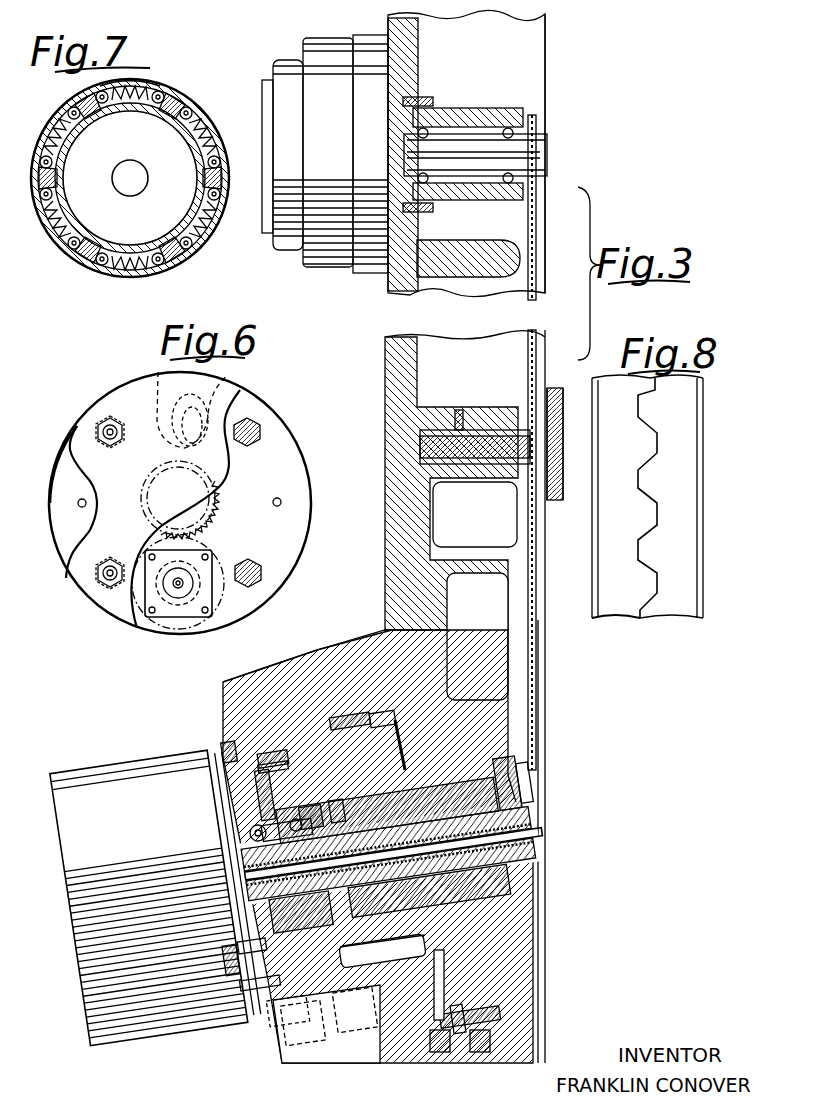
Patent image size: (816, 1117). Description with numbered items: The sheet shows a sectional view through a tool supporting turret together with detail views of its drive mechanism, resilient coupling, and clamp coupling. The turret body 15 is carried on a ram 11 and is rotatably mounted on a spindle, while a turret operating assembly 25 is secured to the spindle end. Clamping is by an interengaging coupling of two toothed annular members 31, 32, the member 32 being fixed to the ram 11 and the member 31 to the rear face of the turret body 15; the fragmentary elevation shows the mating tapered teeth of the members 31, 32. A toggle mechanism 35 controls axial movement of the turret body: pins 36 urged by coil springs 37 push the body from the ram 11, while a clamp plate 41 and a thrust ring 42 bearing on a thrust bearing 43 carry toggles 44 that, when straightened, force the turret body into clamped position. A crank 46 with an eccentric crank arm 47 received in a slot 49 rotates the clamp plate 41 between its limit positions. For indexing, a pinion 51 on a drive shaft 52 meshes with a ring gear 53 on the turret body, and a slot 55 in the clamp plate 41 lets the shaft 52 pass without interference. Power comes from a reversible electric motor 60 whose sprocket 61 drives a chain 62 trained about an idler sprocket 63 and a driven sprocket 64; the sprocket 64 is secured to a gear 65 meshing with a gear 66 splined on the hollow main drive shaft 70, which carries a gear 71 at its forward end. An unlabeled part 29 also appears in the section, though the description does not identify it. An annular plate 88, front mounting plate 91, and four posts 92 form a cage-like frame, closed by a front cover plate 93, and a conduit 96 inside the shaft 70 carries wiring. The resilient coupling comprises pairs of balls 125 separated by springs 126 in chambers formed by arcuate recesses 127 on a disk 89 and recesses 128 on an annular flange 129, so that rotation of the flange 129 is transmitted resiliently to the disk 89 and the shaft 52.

In FIG. 3, the ram 11 is at (512, 1060).
In FIG. 3, the turret body 15 is at (347, 652).
In FIG. 3, the turret operating assembly 25 is at (126, 750).
In FIG. 3, the bearing sleeve 29 is at (384, 795).
In FIG. 3, the annular member 31 is at (447, 1060).
In FIG. 8, the annular member 31 is at (624, 612).
In FIG. 3, the annular member 32 is at (478, 1050).
In FIG. 8, the annular member 32 is at (670, 612).
In FIG. 3, the toggle mechanism 35 is at (284, 802).
In FIG. 3, the pin 36 is at (390, 735).
In FIG. 3, the coil spring 37 is at (348, 720).
In FIG. 3, the clamp plate 41 is at (250, 790).
In FIG. 3, the thrust ring 42 is at (312, 806).
In FIG. 3, the thrust bearing 43 is at (338, 800).
In FIG. 3, the toggle 44 is at (248, 835).
In FIG. 6, the crank 46 is at (158, 372).
In FIG. 6, the crank arm 47 is at (226, 458).
In FIG. 6, the slot 49 is at (225, 375).
In FIG. 3, the pinion 51 is at (390, 898).
In FIG. 7, the drive shaft 52 is at (140, 184).
In FIG. 3, the drive shaft 52 is at (245, 972).
In FIG. 3, the ring gear 53 is at (245, 745).
In FIG. 6, the slot 55 is at (135, 560).
In FIG. 3, the reversible electric motor 60 is at (308, 42).
In FIG. 3, the sprocket 61 is at (540, 186).
In FIG. 3, the chain 62 is at (536, 356).
In FIG. 3, the idler sprocket 63 is at (528, 482).
In FIG. 3, the driven sprocket 64 is at (529, 774).
In FIG. 3, the gear 65 is at (543, 779).
In FIG. 3, the gear 66 is at (415, 866).
In FIG. 3, the main drive shaft 70 is at (384, 828).
In FIG. 6, the gear 71 is at (222, 508).
In FIG. 6, the annular plate 88 is at (292, 548).
In FIG. 7, the disk 89 is at (180, 100).
In FIG. 6, the front mounting plate 91 is at (72, 428).
In FIG. 6, the post 92 is at (105, 418).
In FIG. 6, the front cover plate 93 is at (58, 485).
In FIG. 3, the conduit 96 is at (408, 836).
In FIG. 7, the ball 125 is at (190, 110).
In FIG. 7, the spring 126 is at (213, 138).
In FIG. 7, the arcuate recess 127 is at (58, 202).
In FIG. 7, the arcuate recess 128 is at (48, 236).
In FIG. 7, the annular flange 129 is at (190, 85).